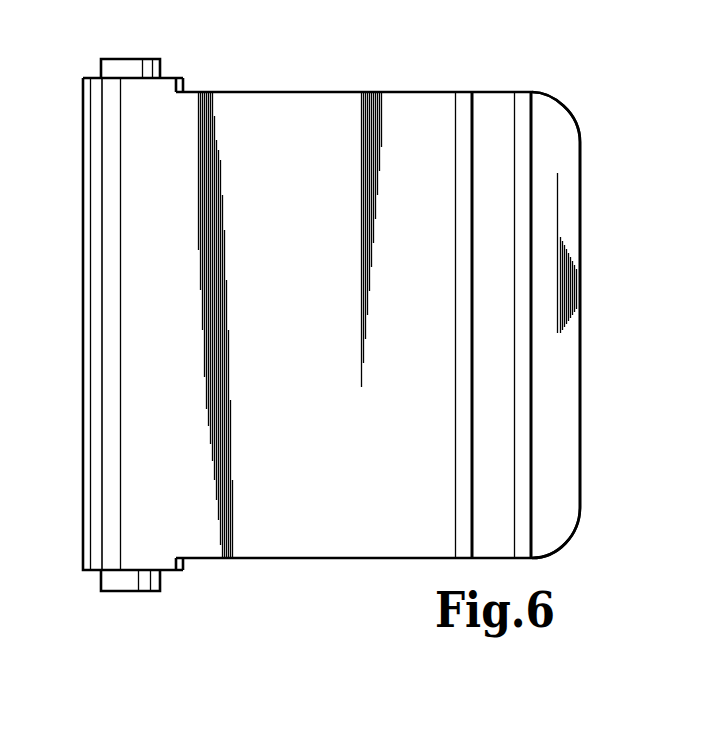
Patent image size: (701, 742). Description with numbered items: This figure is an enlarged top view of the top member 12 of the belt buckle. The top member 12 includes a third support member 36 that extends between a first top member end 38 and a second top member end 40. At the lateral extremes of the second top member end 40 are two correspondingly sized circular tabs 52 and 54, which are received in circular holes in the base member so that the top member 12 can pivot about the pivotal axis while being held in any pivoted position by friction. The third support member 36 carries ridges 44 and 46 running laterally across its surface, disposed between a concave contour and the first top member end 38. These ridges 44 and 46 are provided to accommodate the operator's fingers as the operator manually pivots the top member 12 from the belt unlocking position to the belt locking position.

The top member 12 is at (562, 80).
The third support member 36 is at (312, 107).
The first top member end 38 is at (579, 245).
The second top member end 40 is at (83, 246).
The ridge 44 is at (520, 102).
The ridge 46 is at (462, 102).
The circular tab 52 is at (159, 60).
The circular tab 54 is at (159, 591).